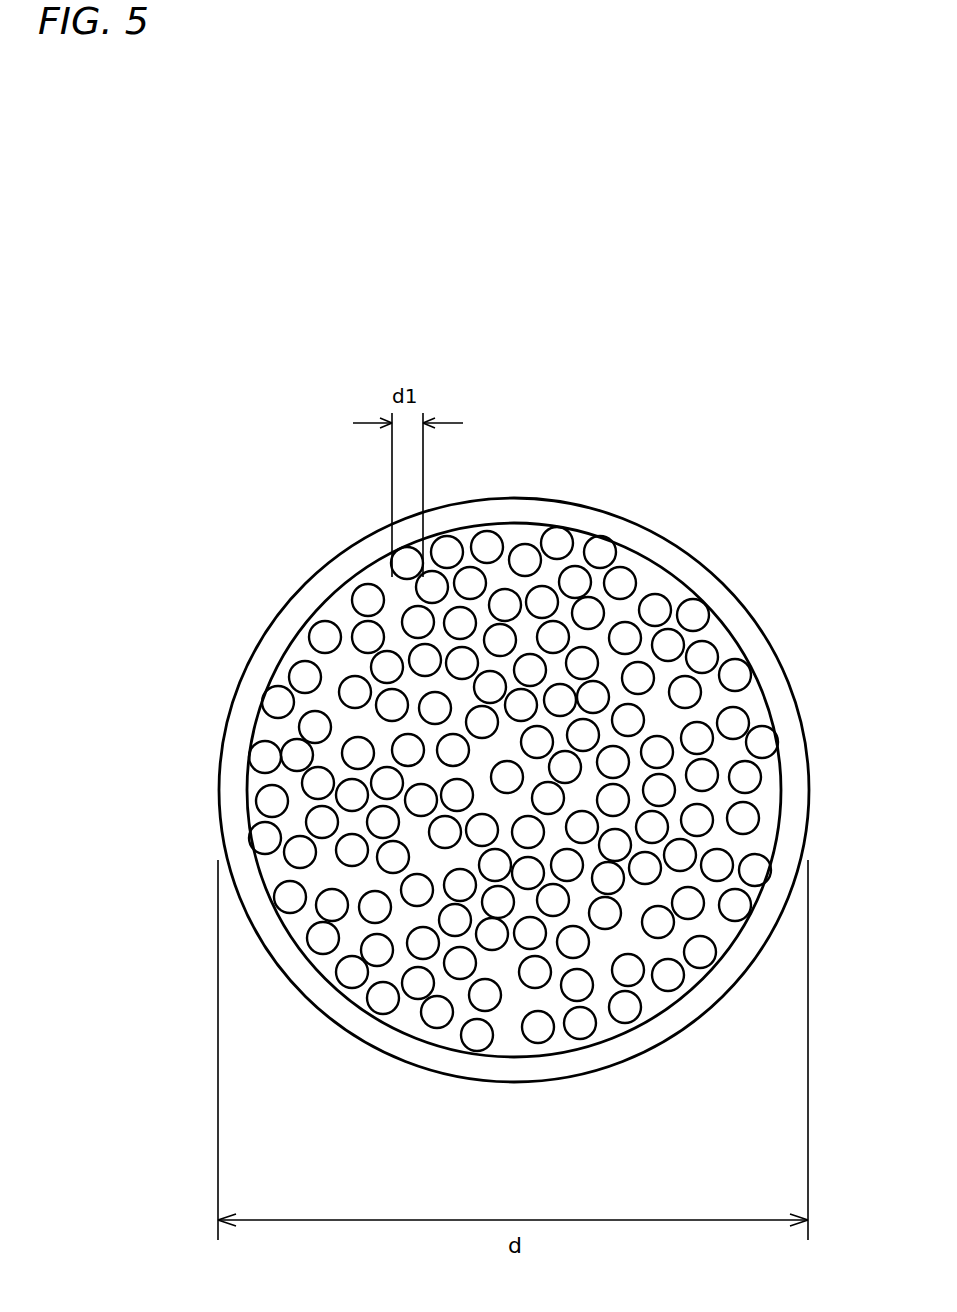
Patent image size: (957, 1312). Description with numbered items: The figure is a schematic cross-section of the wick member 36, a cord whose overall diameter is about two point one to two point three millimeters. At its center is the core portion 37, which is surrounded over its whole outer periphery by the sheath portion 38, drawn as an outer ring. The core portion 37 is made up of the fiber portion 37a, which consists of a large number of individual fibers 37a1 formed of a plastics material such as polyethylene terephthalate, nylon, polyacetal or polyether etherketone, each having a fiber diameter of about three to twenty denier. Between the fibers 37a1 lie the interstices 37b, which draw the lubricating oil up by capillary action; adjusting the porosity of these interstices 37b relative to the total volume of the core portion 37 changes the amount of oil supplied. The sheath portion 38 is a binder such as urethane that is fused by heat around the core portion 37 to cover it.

The wick member 36 is at (766, 582).
The core portion 37 is at (377, 577).
The fiber portion 37a is at (563, 537).
The fibers 37a1 is at (317, 638).
The interstices 37b is at (650, 583).
The sheath portion 38 is at (787, 703).